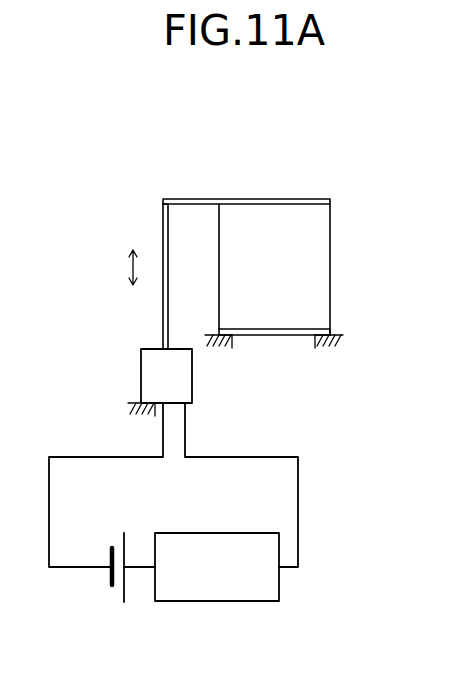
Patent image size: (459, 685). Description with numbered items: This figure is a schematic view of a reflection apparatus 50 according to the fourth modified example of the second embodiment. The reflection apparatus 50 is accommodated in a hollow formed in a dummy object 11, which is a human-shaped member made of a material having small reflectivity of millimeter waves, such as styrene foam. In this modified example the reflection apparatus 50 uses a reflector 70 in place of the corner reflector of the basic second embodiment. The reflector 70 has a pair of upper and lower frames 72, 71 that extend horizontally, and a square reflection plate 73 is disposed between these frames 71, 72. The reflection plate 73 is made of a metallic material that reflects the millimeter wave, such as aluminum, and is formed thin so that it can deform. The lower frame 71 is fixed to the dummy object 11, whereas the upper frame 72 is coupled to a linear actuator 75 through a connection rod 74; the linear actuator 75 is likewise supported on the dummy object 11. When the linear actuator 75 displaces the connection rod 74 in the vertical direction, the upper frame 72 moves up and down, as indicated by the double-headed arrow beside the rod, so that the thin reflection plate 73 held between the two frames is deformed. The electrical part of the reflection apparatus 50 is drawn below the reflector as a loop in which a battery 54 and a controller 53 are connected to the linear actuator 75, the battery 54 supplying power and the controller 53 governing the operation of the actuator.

The reflector 70 is at (353, 175).
The frame 72 is at (272, 199).
The square reflection plate 73 is at (330, 233).
The frame 71 is at (270, 338).
The connection rod 74 is at (163, 218).
The linear actuator 75 is at (141, 349).
The dummy object 11 is at (137, 403).
The reflection apparatus 50 is at (331, 489).
The controller 53 is at (215, 601).
The battery 54 is at (125, 588).